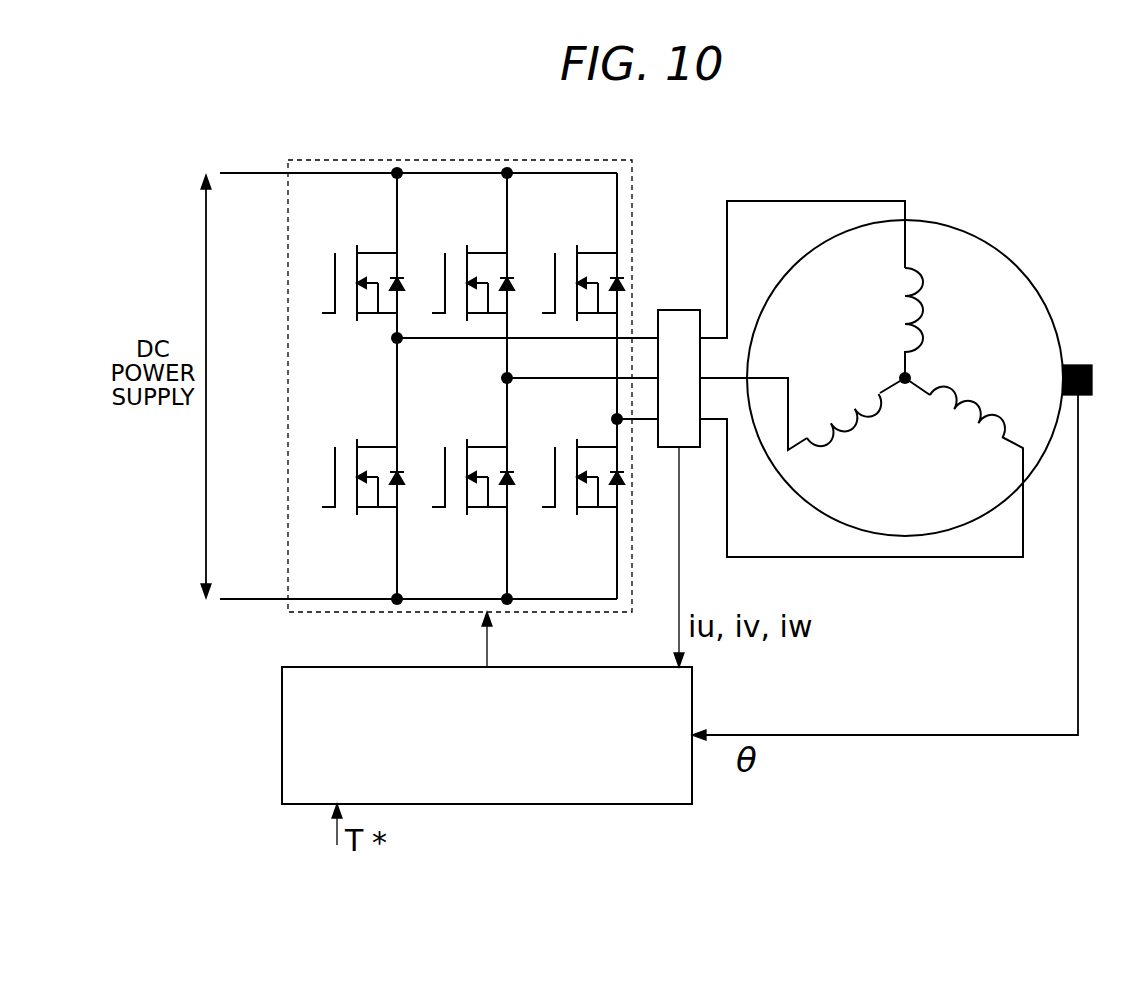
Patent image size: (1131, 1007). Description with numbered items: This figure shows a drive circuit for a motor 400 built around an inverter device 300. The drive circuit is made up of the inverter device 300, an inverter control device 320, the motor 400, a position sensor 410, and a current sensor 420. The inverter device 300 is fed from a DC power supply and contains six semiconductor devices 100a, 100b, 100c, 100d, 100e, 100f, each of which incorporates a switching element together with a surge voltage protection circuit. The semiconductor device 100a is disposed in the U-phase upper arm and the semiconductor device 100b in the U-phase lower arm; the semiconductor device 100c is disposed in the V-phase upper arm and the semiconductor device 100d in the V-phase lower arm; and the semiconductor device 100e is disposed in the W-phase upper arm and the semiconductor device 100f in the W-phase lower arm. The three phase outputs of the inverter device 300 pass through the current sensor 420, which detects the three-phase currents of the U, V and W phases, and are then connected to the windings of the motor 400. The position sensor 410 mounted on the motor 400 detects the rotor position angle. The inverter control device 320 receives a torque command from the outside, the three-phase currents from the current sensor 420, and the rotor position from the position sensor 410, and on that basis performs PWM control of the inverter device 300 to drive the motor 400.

The inverter device 300 is at (343, 160).
The semiconductor device 100a is at (378, 250).
The semiconductor device 100b is at (378, 512).
The semiconductor device 100c is at (488, 250).
The semiconductor device 100d is at (488, 512).
The semiconductor device 100e is at (598, 250).
The semiconductor device 100f is at (598, 512).
The current sensor 420 is at (668, 308).
The motor 400 is at (1003, 248).
The position sensor 410 is at (1070, 363).
The inverter control device 320 is at (280, 741).